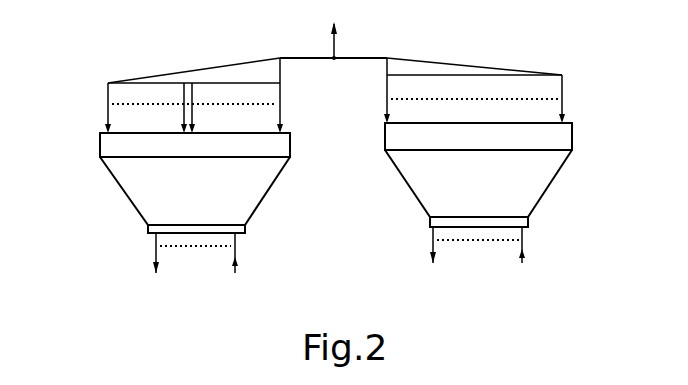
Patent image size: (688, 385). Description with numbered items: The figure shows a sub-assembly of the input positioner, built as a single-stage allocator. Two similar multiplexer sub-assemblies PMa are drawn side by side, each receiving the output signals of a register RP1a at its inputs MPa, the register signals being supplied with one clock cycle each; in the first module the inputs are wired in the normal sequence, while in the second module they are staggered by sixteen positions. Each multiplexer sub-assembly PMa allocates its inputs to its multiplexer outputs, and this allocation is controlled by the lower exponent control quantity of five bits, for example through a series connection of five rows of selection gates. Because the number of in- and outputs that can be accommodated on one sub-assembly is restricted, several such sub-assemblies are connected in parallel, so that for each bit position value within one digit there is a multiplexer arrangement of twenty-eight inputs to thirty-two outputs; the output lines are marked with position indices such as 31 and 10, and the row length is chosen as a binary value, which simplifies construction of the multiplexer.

The multiplexer inputs MPa is at (334, 37).
The multiplexer sub-assembly PMa is at (405, 177).
The register RP1a is at (558, 138).
The bit line 31 is at (166, 253).
The bit line 10 is at (531, 247).